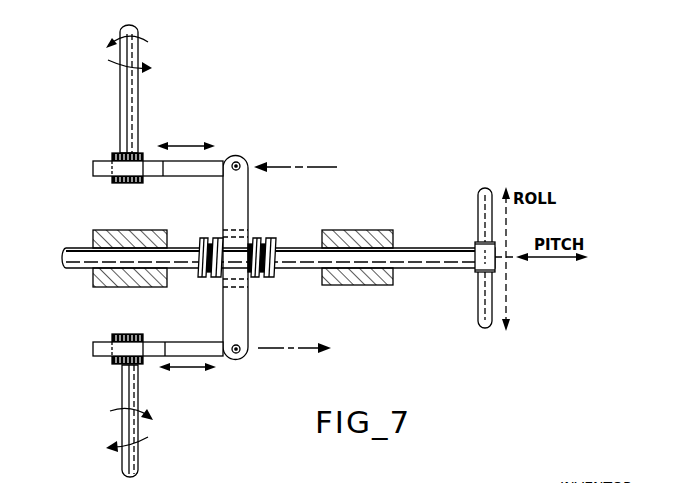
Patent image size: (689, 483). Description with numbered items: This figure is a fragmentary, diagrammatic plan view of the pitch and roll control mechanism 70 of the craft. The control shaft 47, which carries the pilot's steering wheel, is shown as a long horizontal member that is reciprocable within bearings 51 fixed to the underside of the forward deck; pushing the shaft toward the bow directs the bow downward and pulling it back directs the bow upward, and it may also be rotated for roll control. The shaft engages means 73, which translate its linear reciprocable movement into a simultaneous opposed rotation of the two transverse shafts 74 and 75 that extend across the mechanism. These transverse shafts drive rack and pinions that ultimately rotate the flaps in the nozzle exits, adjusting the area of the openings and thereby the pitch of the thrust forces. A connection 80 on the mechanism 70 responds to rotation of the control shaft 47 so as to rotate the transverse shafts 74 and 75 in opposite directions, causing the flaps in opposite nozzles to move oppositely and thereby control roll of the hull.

The control shaft 47 is at (428, 247).
The bearings 51 is at (120, 232).
The mechanism 70 is at (84, 289).
The means for translating reciprocable movement 73 is at (253, 204).
The transverse shaft 74 is at (122, 456).
The transverse shaft 75 is at (128, 110).
The connection 80 is at (270, 280).